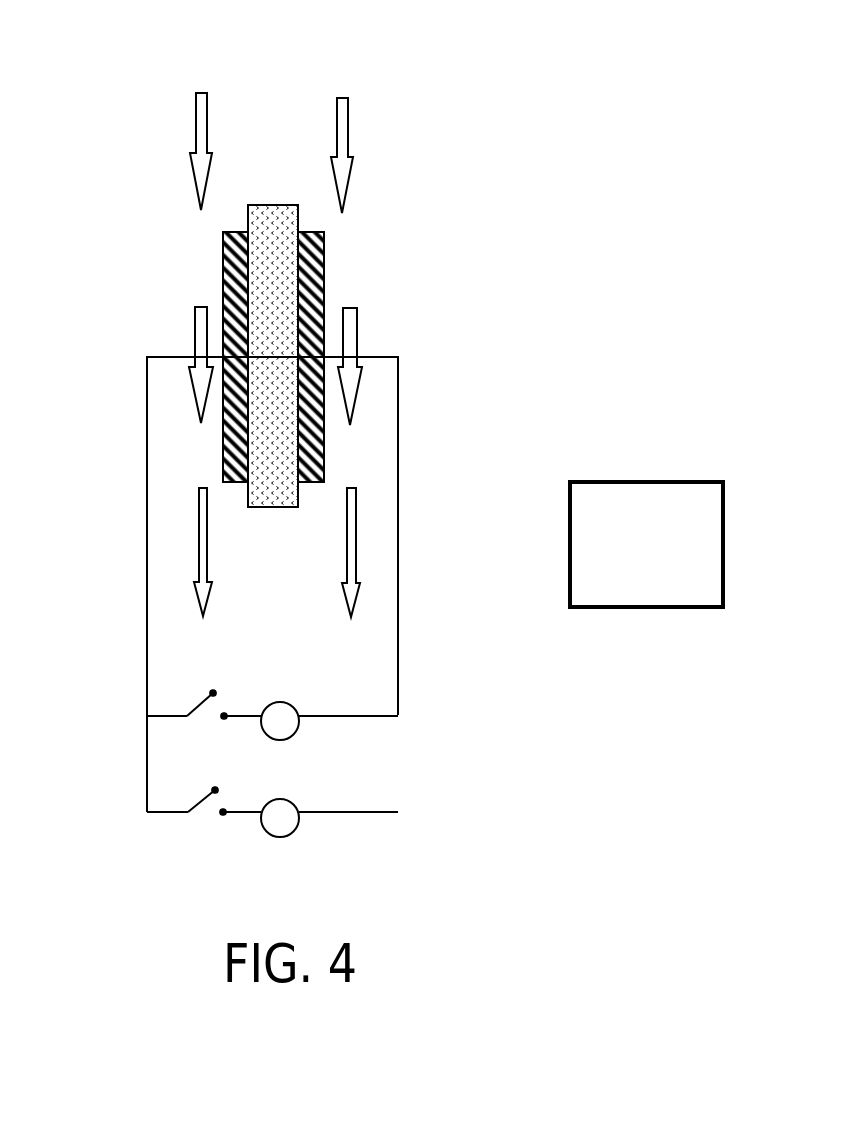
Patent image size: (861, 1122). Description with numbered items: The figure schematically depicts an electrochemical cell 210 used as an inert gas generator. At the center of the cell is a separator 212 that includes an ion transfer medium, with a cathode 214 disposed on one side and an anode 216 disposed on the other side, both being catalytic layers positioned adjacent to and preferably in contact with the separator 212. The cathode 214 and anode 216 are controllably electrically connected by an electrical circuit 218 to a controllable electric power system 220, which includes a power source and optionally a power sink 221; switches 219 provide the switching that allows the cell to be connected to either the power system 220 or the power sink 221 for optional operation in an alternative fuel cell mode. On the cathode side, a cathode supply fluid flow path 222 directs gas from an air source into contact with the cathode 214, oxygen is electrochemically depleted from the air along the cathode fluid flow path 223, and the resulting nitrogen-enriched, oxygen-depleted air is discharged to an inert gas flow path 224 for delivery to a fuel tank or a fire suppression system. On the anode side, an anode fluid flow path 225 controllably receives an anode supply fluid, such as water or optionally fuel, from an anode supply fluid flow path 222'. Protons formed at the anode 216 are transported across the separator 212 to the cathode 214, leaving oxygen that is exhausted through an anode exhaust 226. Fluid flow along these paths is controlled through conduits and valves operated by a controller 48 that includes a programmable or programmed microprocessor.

The electrochemical cell 210 is at (573, 100).
The separator 212 is at (273, 205).
The cathode 214 is at (237, 483).
The anode 216 is at (312, 483).
The electrical circuit 218 is at (398, 387).
The switches 219 is at (198, 708).
The controllable electric power system 220 is at (283, 740).
The power sink 221 is at (293, 833).
The cathode supply fluid flow path 222 is at (134, 151).
The anode supply fluid flow path 222' is at (414, 150).
The cathode fluid flow path 223 is at (195, 329).
The inert gas flow path 224 is at (199, 542).
The anode fluid flow path 225 is at (357, 343).
The anode exhaust 226 is at (357, 557).
The controller 48 is at (677, 608).